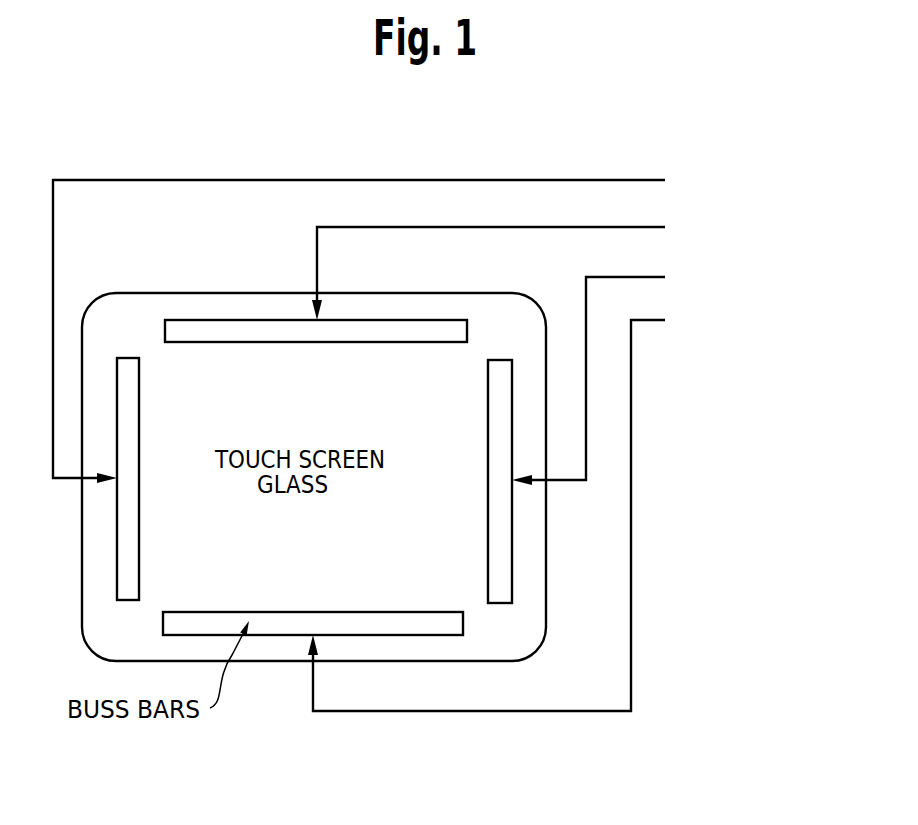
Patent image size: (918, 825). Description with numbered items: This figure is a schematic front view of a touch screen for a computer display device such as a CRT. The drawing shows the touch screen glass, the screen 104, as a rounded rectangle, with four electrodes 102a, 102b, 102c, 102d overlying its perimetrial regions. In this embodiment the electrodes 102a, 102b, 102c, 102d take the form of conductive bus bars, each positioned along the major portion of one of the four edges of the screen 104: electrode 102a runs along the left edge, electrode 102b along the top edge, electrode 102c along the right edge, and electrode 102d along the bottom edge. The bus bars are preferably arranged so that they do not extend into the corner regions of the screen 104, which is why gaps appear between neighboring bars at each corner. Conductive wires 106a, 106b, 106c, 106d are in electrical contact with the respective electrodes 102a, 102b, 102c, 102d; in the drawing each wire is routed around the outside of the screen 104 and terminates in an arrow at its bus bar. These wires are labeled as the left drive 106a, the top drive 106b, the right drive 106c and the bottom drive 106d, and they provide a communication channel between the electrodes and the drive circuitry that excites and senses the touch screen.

The screen 104 is at (423, 293).
The electrode 102a is at (125, 525).
The electrode 102b is at (257, 317).
The electrode 102c is at (498, 543).
The electrode 102d is at (350, 625).
The conductive wire 106a is at (570, 178).
The conductive wire 106b is at (566, 226).
The conductive wire 106c is at (648, 276).
The conductive wire 106d is at (650, 322).